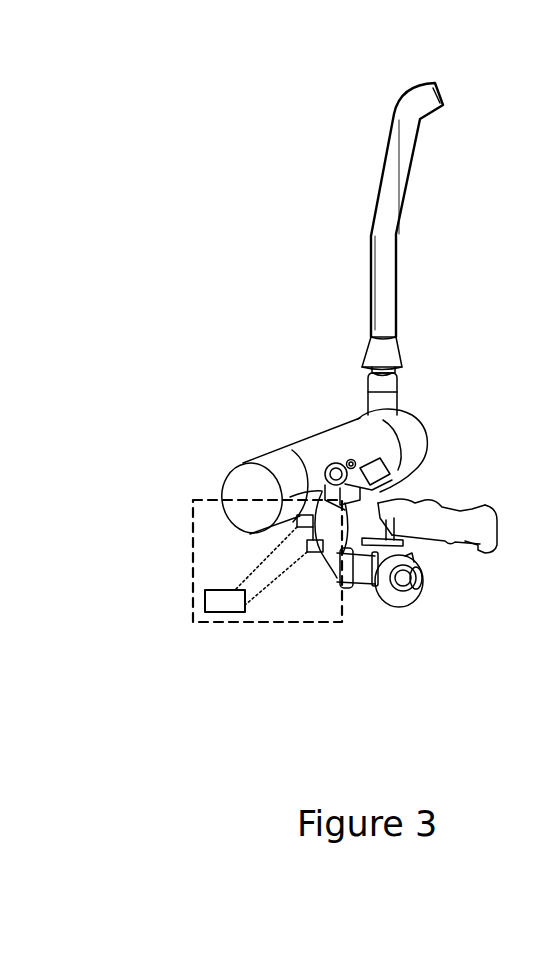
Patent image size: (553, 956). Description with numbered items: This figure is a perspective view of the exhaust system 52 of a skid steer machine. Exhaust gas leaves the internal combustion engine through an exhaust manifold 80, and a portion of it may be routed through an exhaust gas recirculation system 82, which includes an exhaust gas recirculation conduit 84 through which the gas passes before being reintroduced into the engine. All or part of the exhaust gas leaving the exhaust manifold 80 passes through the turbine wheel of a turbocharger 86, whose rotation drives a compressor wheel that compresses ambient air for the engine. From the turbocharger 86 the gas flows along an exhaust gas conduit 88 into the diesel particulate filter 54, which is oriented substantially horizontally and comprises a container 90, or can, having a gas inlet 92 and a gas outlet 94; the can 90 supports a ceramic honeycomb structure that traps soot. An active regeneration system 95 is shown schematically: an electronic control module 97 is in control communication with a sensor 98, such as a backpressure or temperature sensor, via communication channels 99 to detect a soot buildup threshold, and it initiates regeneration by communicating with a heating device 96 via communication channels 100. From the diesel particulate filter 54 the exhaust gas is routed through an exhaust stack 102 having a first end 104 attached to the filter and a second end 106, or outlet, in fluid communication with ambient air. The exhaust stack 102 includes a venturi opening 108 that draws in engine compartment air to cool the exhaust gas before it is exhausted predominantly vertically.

The exhaust system 52 is at (270, 358).
The diesel particulate filter 54 is at (296, 451).
The exhaust manifold 80 is at (424, 507).
The exhaust gas recirculation system 82 is at (394, 474).
The exhaust gas recirculation conduit 84 is at (378, 498).
The turbocharger 86 is at (376, 597).
The exhaust gas conduit 88 is at (316, 562).
The container 90 is at (342, 431).
The gas inlet 92 is at (234, 485).
The gas outlet 94 is at (413, 425).
The active regeneration system 95 is at (208, 514).
The heating device 96 is at (297, 521).
The electronic control module 97 is at (205, 598).
The sensor 98 is at (315, 553).
The communication channels 99 is at (274, 580).
The communication channels 100 is at (258, 574).
The exhaust stack 102 is at (380, 298).
The first end 104 is at (405, 391).
The second end 106 is at (449, 114).
The venturi opening 108 is at (362, 381).